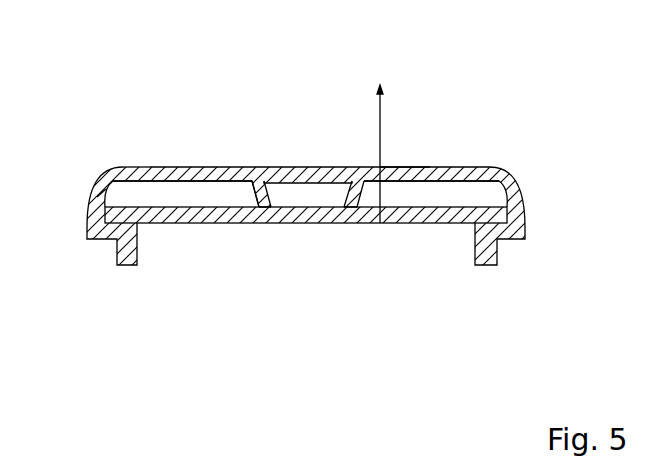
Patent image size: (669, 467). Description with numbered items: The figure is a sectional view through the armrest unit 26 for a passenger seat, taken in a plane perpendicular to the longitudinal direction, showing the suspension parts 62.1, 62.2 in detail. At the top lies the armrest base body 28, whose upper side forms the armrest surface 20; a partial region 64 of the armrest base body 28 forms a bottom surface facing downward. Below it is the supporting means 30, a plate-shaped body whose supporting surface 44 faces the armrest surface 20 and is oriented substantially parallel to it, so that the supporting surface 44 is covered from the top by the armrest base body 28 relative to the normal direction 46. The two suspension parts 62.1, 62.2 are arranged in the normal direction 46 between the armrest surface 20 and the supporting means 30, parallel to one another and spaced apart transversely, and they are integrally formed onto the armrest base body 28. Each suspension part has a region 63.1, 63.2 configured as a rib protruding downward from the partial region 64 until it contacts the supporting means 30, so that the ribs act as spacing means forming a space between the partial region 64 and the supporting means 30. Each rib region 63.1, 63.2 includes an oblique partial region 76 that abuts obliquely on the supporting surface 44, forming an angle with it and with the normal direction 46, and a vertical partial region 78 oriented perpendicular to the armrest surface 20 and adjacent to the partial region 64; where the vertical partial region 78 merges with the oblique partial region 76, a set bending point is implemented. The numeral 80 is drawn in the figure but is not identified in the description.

The armrest surface 20 is at (342, 167).
The armrest unit 26 is at (470, 138).
The armrest base body 28 is at (108, 170).
The supporting means 30 is at (425, 223).
The supporting surface 44 is at (127, 170).
The normal direction 46 is at (382, 128).
The suspension part 62.1 is at (374, 201).
The suspension part 62.2 is at (235, 200).
The region configured as a rib 63.1 is at (403, 167).
The region configured as a rib 63.2 is at (215, 170).
The partial region 64 is at (182, 170).
The oblique partial region 76 is at (348, 207).
The vertical partial region 78 is at (250, 192).
The recess 80 is at (350, 183).